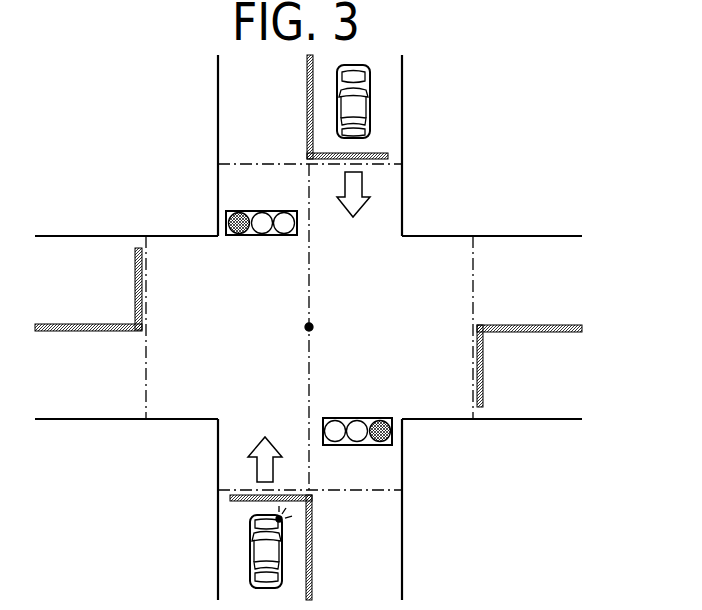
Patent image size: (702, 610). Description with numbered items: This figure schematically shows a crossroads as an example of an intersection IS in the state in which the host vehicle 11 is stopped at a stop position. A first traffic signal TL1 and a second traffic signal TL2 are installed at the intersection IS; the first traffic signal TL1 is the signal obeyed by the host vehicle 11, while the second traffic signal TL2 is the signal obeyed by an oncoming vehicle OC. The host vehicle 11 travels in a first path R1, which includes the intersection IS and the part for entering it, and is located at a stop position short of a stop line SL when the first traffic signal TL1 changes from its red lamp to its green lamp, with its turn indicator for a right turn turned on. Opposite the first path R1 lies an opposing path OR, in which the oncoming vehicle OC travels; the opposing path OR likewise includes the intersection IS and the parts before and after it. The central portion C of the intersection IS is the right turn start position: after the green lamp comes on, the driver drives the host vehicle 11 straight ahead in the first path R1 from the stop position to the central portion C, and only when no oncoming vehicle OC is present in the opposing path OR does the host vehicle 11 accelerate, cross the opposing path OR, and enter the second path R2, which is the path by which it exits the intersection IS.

The first path R1 is at (219, 527).
The second path R2 is at (556, 237).
The opposing path OR is at (390, 81).
The oncoming vehicle OC is at (371, 118).
The stop line SL is at (383, 163).
The intersection IS is at (445, 237).
The central portion C is at (313, 327).
The first traffic signal TL1 is at (230, 212).
The second traffic signal TL2 is at (392, 432).
The host vehicle 11 is at (248, 553).